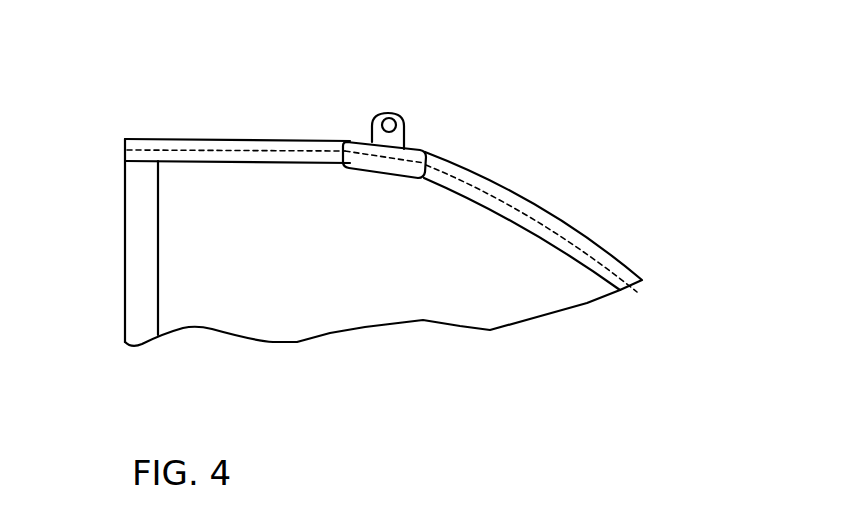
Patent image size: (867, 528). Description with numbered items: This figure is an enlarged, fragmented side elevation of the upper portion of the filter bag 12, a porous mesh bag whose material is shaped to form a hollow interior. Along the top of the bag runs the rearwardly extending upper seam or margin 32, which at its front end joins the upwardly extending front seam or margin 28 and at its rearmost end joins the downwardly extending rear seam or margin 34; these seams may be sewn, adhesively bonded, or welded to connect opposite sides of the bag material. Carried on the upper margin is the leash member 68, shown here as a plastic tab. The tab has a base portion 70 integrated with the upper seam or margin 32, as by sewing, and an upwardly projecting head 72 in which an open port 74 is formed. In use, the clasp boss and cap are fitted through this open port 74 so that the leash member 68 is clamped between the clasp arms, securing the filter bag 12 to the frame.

The filter bag 12 is at (482, 310).
The rear seam or margin 34 is at (128, 308).
The upper seam or margin 32 is at (264, 149).
The leash member 68 is at (515, 179).
The front seam or margin 28 is at (630, 270).
The base portion 70 is at (390, 176).
The head 72 is at (382, 115).
The open port 74 is at (452, 138).